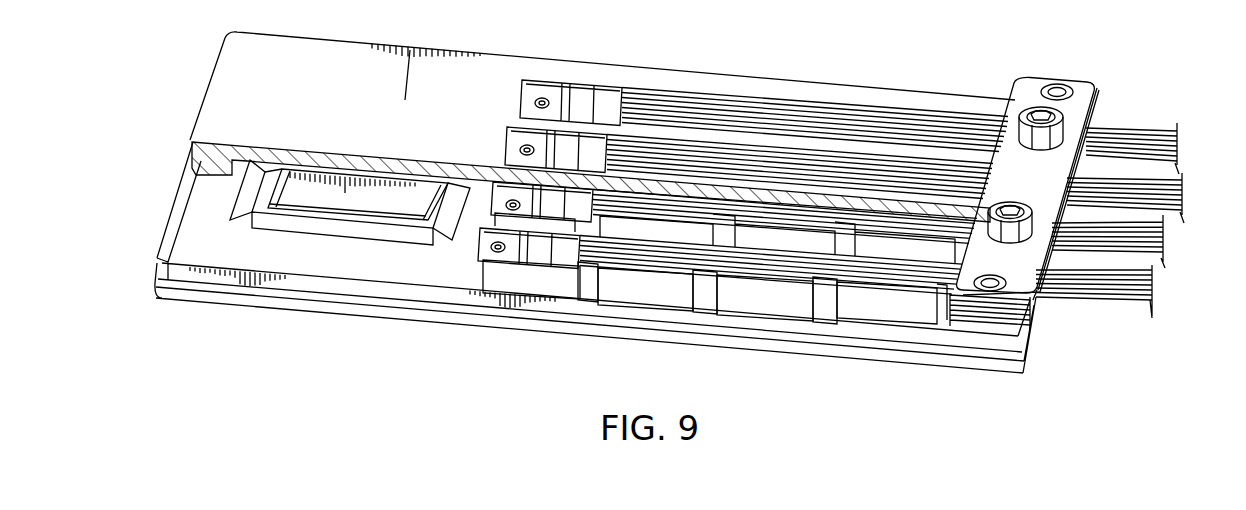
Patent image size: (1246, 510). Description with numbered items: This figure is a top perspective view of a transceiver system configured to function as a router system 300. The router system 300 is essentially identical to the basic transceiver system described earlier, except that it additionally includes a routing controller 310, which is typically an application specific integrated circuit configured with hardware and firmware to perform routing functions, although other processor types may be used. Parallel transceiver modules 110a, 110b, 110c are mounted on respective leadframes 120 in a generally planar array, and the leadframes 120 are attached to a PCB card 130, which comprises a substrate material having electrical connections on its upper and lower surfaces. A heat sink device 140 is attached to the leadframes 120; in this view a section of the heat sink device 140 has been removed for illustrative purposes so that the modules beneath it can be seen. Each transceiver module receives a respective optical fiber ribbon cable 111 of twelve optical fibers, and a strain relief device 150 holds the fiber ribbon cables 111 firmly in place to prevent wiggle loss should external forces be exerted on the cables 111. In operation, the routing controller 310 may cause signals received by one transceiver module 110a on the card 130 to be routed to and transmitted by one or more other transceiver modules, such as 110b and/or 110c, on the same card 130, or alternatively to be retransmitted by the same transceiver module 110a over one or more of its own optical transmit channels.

The router system 300 is at (836, 40).
The heat sink device 140 is at (258, 68).
The leadframes 120 is at (236, 292).
The PCB card 130 is at (338, 318).
The routing controller 310 is at (380, 243).
The transceiver module 110a is at (562, 268).
The transceiver module 110b is at (673, 280).
The transceiver module 110c is at (793, 290).
The strain relief device 150 is at (1036, 78).
The optical fiber ribbon cable 111 is at (1126, 133).